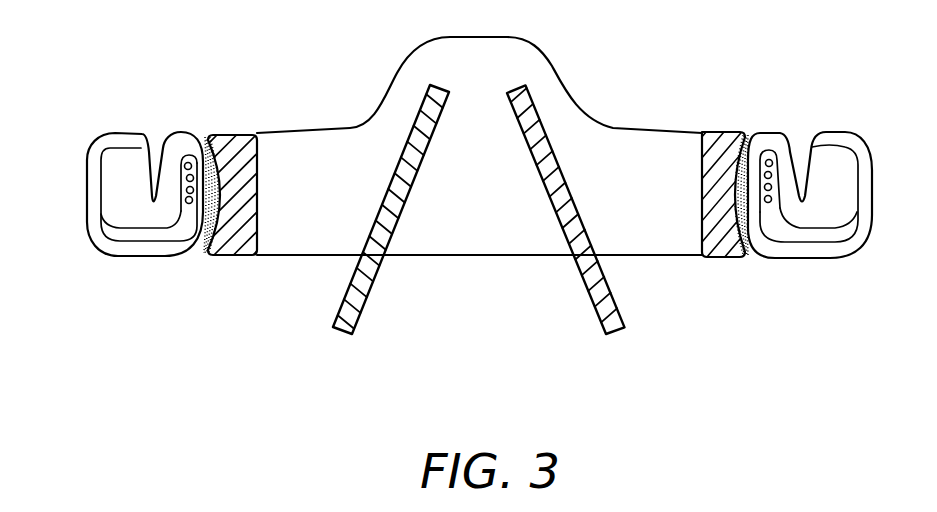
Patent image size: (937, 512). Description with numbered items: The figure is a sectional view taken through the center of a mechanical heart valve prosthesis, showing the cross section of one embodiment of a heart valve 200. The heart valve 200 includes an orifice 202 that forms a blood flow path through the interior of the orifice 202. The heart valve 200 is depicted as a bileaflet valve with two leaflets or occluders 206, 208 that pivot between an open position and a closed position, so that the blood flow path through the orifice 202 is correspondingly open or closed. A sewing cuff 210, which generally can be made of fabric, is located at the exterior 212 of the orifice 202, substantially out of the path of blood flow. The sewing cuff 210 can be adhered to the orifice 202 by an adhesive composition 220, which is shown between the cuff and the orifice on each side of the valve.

The heart valve 200 is at (684, 80).
The orifice 202 is at (725, 238).
The leaflet or occluder 206 is at (367, 308).
The leaflet or occluder 208 is at (602, 322).
The sewing cuff 210 is at (87, 221).
The exterior of orifice 212 is at (206, 218).
The adhesive composition 220 is at (201, 137).